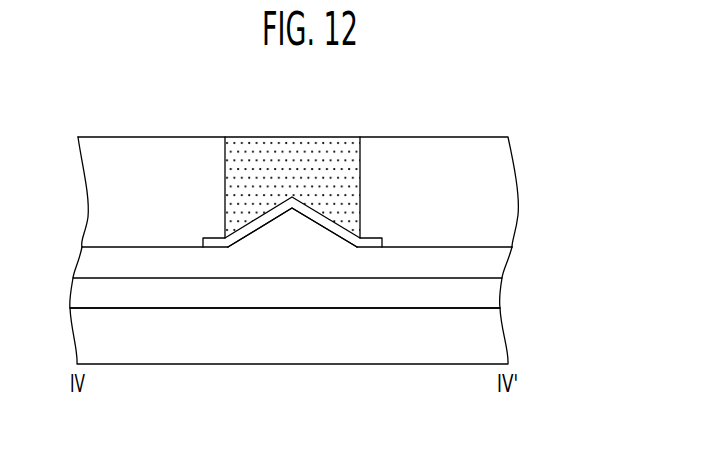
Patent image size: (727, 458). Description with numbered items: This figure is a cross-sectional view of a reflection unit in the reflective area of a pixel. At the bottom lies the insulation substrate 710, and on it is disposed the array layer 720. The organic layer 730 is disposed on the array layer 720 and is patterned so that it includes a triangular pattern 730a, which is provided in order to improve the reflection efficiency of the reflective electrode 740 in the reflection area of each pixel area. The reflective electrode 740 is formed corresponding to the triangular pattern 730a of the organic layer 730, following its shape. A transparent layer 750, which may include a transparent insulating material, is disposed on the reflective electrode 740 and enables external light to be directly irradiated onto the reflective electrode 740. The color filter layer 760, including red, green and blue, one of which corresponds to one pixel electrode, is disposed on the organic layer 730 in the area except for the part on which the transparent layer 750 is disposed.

The insulation substrate 710 is at (500, 345).
The array layer 720 is at (497, 295).
The organic layer 730 is at (500, 267).
The triangular pattern 730a is at (316, 235).
The reflective electrode 740 is at (258, 225).
The transparent layer 750 is at (272, 150).
The color filter layer 760 is at (500, 180).